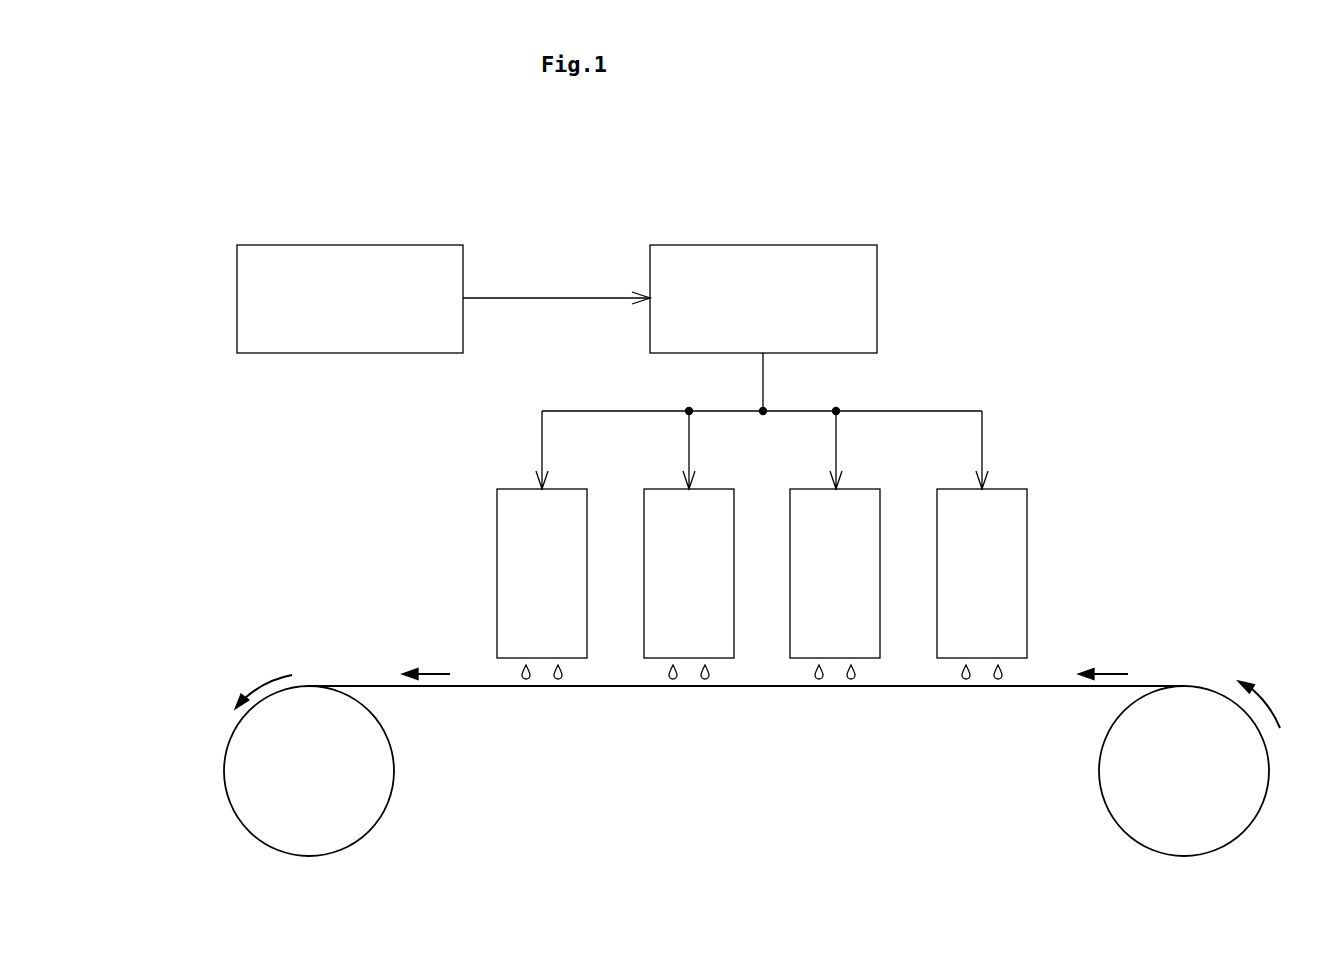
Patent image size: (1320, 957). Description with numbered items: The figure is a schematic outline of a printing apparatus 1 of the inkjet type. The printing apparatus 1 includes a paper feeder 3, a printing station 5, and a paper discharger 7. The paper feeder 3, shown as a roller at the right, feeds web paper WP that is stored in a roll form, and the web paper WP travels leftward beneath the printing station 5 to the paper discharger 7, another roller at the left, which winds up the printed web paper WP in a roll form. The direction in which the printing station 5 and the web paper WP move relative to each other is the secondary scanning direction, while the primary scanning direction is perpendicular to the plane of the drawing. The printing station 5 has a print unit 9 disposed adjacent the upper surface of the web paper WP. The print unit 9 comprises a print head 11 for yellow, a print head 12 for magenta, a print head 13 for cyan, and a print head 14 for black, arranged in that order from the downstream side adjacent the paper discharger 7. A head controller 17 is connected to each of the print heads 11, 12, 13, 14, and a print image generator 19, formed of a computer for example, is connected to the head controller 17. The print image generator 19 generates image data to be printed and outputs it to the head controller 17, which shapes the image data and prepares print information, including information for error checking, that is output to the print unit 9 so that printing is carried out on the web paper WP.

The printing apparatus 1 is at (1143, 222).
The paper feeder 3 is at (1230, 662).
The printing station 5 is at (1027, 390).
The paper discharger 7 is at (218, 690).
The print unit 9 is at (765, 584).
The print head for yellow 11 is at (497, 574).
The print head for magenta 12 is at (644, 574).
The print head for cyan 13 is at (790, 574).
The print head for black 14 is at (937, 574).
The head controller 17 is at (762, 245).
The print image generator 19 is at (348, 245).
The web paper WP is at (1148, 686).